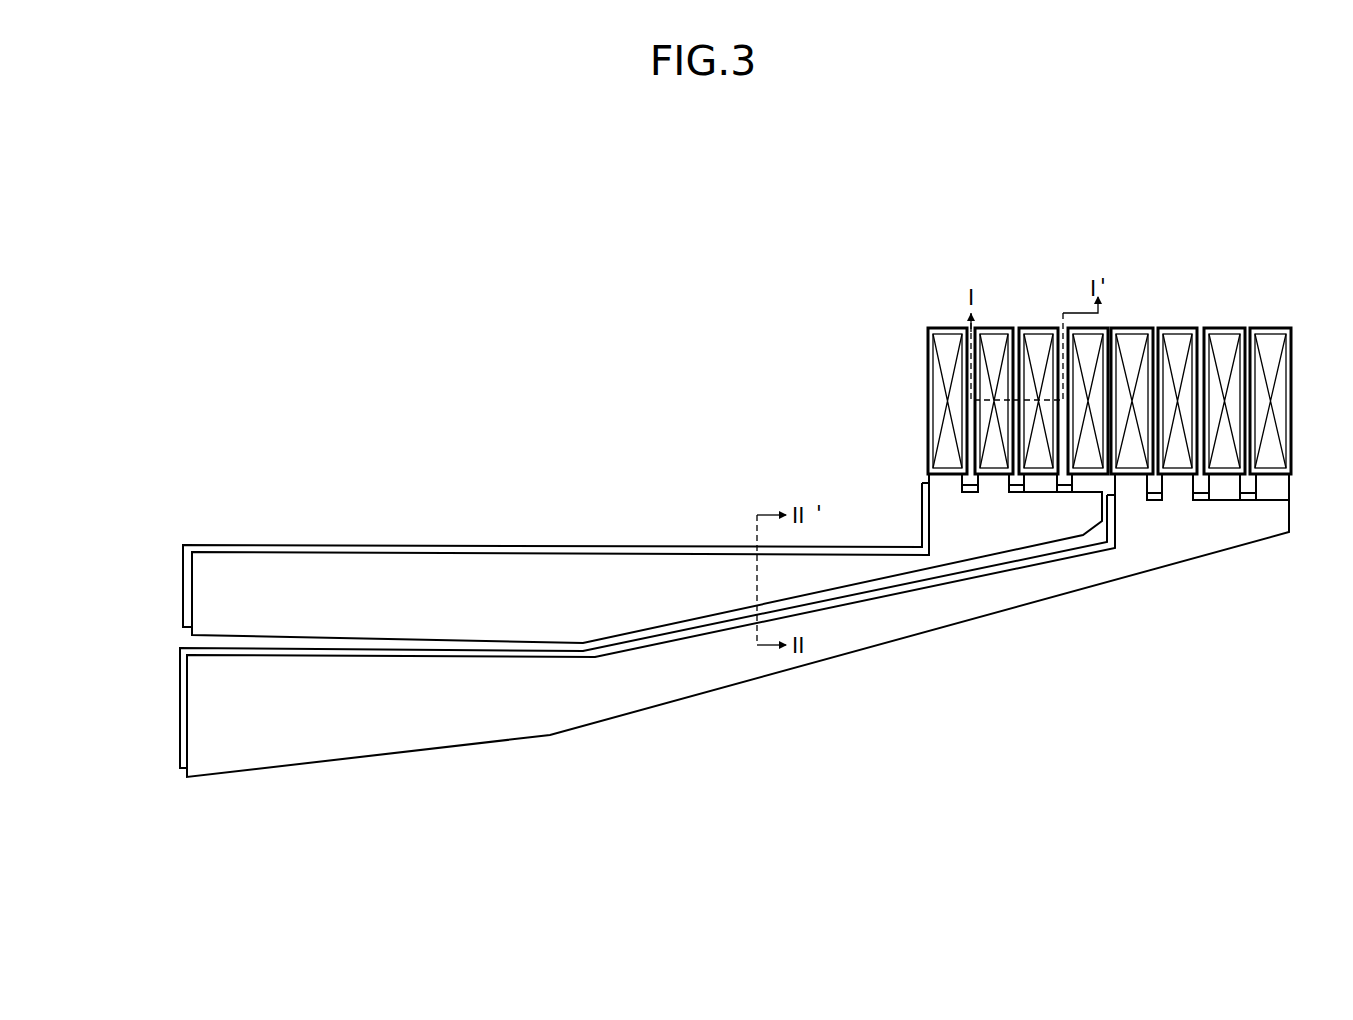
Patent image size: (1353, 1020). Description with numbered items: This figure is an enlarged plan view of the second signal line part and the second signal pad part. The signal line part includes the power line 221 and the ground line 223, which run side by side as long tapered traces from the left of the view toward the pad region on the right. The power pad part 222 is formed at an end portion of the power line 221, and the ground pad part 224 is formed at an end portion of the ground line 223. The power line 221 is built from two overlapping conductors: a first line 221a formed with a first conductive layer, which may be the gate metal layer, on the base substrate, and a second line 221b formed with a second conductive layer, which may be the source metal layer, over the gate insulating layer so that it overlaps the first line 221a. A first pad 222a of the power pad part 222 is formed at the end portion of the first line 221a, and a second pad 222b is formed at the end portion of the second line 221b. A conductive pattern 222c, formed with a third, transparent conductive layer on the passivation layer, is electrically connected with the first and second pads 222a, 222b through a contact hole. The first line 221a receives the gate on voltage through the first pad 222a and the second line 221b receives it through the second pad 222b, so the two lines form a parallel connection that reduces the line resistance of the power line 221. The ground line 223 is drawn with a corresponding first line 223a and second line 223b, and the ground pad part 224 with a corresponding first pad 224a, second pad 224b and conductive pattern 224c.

The power line 221 is at (255, 506).
The first line 221a is at (278, 550).
The second line 221b is at (342, 567).
The power pad part 222 is at (1097, 248).
The first pad 222a is at (1083, 328).
The second pad 222b is at (990, 328).
The conductive pattern 222c is at (942, 328).
The ground line 223 is at (112, 683).
The first line of ground line 223a is at (185, 732).
The second line of ground line 223b is at (198, 693).
The ground pad part 224 is at (1125, 248).
The first pad of ground pad part 224a is at (1270, 328).
The second pad of ground pad part 224b is at (1178, 328).
The conductive pattern of ground pad part 224c is at (1273, 328).